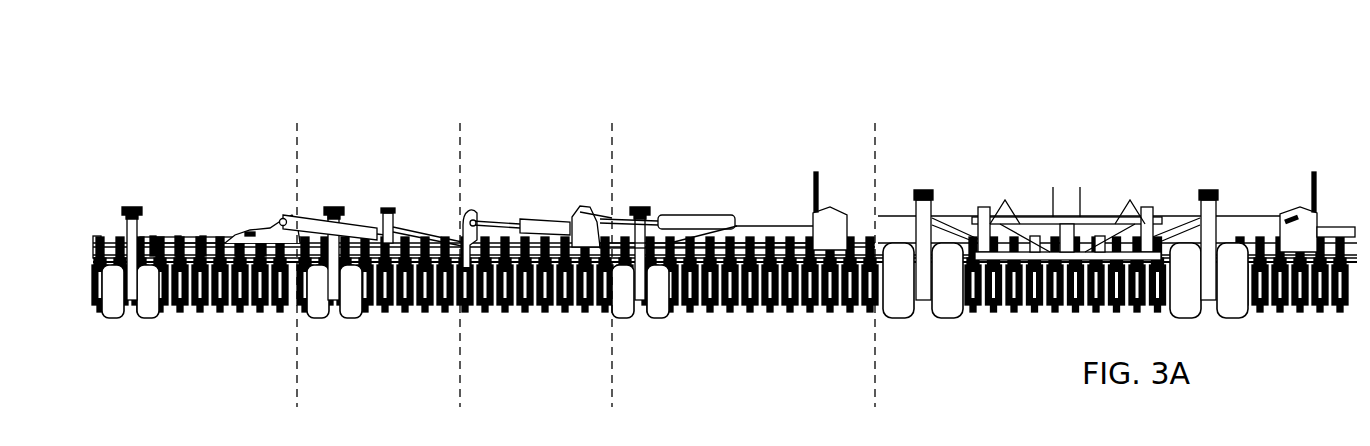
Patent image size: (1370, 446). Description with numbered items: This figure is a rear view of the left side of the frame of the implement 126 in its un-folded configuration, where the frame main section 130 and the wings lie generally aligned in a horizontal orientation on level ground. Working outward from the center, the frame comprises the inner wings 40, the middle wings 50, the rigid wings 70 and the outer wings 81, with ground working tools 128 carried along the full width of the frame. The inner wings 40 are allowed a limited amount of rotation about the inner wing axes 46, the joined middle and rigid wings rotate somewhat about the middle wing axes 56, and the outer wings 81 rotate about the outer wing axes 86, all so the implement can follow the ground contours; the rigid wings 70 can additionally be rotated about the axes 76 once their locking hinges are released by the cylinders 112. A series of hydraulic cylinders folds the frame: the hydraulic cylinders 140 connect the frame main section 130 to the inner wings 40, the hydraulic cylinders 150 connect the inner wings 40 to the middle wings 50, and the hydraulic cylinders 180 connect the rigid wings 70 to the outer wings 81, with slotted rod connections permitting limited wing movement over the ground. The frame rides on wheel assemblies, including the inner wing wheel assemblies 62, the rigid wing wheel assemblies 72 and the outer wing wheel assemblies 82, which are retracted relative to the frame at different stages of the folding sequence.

The implement 126 is at (1183, 75).
The ground working tools 128 is at (217, 316).
The outer wing wheel assemblies 82 is at (147, 318).
The rigid wing wheel assemblies 72 is at (351, 318).
The inner wing wheel assemblies 62 is at (657, 318).
The outer wings 81 is at (213, 240).
The hydraulic cylinders 180 is at (362, 228).
The rigid wings 70 is at (416, 226).
The cylinders 112 is at (537, 225).
The middle wings 50 is at (586, 212).
The hydraulic cylinders 150 is at (692, 216).
The inner wings 40 is at (790, 226).
The hydraulic cylinders 140 is at (947, 218).
The frame main section 130 is at (1035, 216).
The outer wing axes 86 is at (302, 140).
The axes 76 is at (466, 140).
The middle wing axes 56 is at (620, 140).
The inner wing axes 46 is at (888, 145).